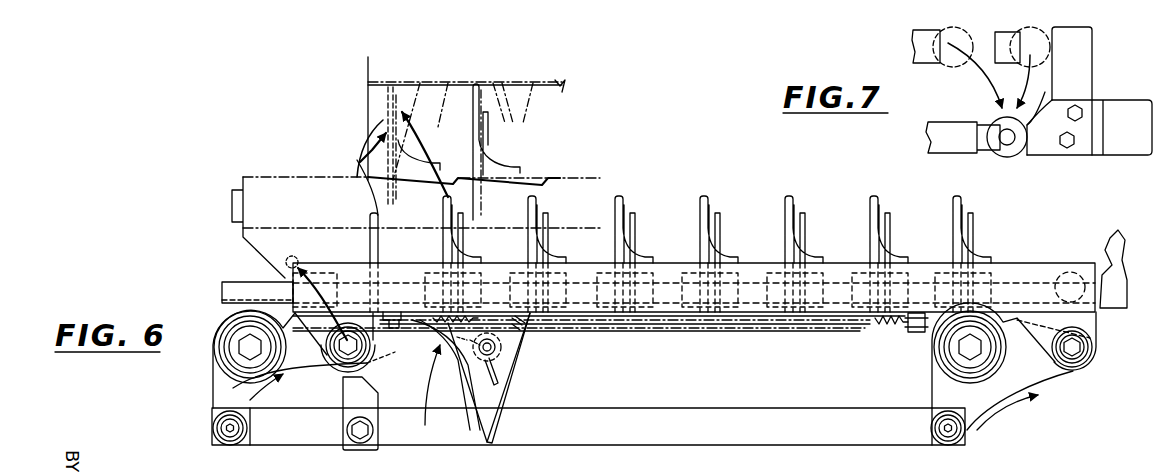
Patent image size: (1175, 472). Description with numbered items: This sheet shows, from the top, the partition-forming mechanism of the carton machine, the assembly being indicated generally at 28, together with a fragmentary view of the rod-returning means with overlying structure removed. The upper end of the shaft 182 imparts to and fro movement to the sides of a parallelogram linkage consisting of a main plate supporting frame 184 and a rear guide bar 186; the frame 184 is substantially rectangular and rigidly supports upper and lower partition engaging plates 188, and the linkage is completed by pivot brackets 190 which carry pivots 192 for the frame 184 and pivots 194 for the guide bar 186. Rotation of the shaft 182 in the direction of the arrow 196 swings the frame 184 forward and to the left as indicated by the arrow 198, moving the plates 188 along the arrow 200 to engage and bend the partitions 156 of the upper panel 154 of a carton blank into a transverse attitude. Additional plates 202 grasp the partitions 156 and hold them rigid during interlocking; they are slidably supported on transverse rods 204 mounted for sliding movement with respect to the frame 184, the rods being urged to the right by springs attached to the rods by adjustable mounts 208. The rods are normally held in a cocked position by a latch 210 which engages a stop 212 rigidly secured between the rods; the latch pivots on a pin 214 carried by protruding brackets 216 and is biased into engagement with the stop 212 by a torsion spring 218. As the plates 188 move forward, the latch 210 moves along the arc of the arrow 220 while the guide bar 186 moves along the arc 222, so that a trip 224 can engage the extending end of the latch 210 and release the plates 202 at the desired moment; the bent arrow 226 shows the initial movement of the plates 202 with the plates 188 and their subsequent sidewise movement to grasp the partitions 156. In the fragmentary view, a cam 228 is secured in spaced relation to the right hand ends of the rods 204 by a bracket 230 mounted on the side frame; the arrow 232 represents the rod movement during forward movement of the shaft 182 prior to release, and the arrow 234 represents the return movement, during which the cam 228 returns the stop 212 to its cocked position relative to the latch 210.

In FIG. 6, the conveyor assembly 28 is at (198, 200).
In FIG. 6, the upper folded panel 154 is at (505, 75).
In FIG. 6, the partitions 156 is at (386, 104).
In FIG. 6, the shaft 182 is at (232, 338).
In FIG. 6, the main plate supporting frame 184 is at (585, 318).
In FIG. 6, the rear guide bar 186 is at (768, 408).
In FIG. 6, the partition engaging plates 188 is at (396, 110).
In FIG. 6, the pivot brackets 190 is at (220, 392).
In FIG. 6, the pivots 192 is at (346, 347).
In FIG. 6, the pivots 194 is at (214, 428).
In FIG. 6, the arrow 196 is at (275, 387).
In FIG. 6, the arrow 198 is at (347, 337).
In FIG. 6, the arrow 200 is at (480, 136).
In FIG. 6, the additional plates 202 is at (385, 128).
In FIG. 6, the transverse rods 204 is at (233, 284).
In FIG. 7, the transverse rods 204 is at (945, 148).
In FIG. 6, the adjustable mounts 208 is at (437, 285).
In FIG. 6, the latch 210 is at (492, 403).
In FIG. 6, the stop 212 is at (392, 332).
In FIG. 6, the pin 214 is at (505, 352).
In FIG. 6, the protruding brackets 216 is at (512, 336).
In FIG. 6, the torsion spring 218 is at (500, 381).
In FIG. 6, the arrow 220 is at (458, 405).
In FIG. 6, the arc 222 is at (378, 350).
In FIG. 6, the trip 224 is at (350, 400).
In FIG. 6, the bent arrow 226 is at (372, 180).
In FIG. 7, the cam 228 is at (1075, 55).
In FIG. 7, the bracket 230 is at (1122, 145).
In FIG. 7, the arrow 232 is at (1000, 105).
In FIG. 7, the arrow 234 is at (1039, 76).